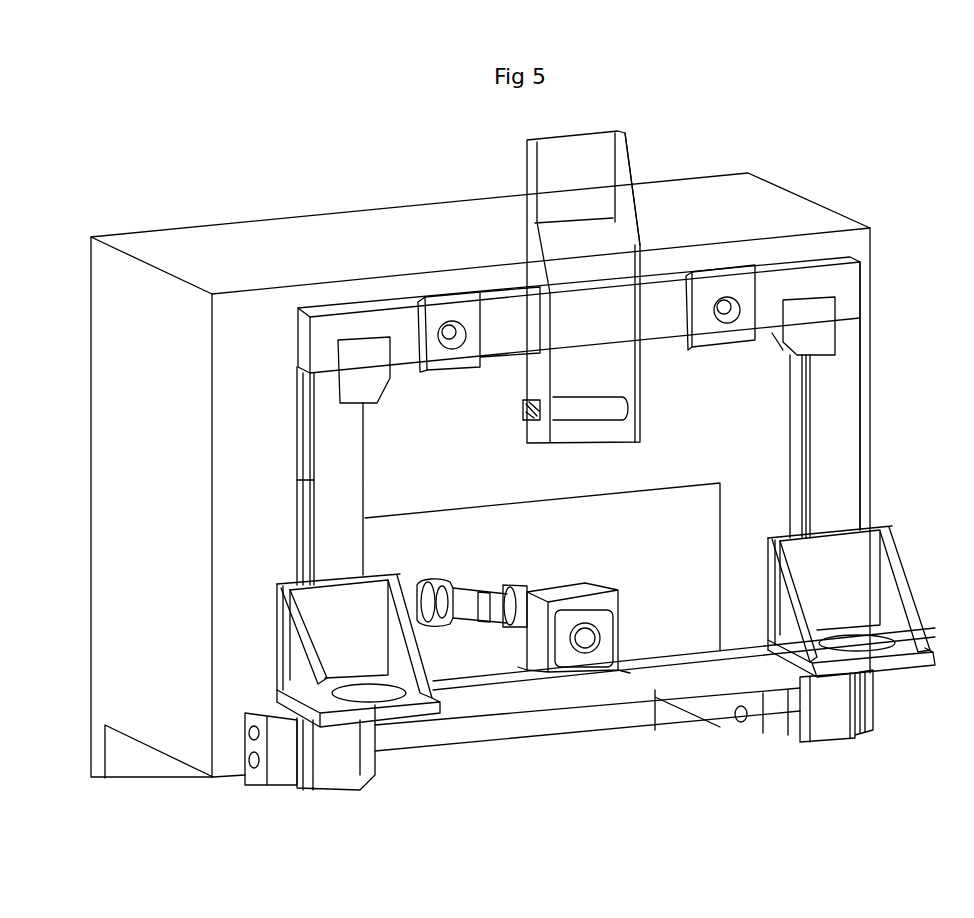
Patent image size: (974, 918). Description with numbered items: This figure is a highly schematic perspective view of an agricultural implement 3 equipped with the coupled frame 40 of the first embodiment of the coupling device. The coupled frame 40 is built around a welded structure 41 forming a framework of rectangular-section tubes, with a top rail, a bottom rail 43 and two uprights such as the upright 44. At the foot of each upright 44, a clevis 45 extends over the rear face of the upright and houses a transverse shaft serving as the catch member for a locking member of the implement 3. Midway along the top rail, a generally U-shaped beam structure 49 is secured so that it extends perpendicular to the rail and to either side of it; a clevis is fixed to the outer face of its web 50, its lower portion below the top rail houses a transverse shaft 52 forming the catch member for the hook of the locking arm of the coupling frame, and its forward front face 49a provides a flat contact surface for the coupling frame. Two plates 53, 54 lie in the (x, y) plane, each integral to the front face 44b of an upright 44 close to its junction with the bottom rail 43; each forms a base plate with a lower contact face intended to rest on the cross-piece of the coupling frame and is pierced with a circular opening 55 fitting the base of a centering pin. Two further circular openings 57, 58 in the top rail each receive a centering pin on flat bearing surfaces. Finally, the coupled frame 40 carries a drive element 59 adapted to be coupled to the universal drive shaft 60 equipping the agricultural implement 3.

The agricultural implement 3 is at (120, 350).
The coupled frame 40 is at (832, 456).
The welded structure 41 is at (840, 366).
The bottom rail 43 is at (653, 690).
The upright 44 is at (313, 442).
The front face of upright 44b is at (328, 478).
The clevis 45 is at (275, 780).
The U-shaped beam structure 49 is at (654, 414).
The forward front face 49a is at (598, 310).
The web 50 is at (588, 145).
The transverse shaft 52 is at (570, 412).
The plate 53 is at (381, 692).
The plate 54 is at (903, 662).
The circular opening 55 is at (377, 693).
The circular opening 57 is at (450, 330).
The circular opening 58 is at (727, 308).
The drive element 59 is at (565, 653).
The universal drive shaft 60 is at (470, 610).